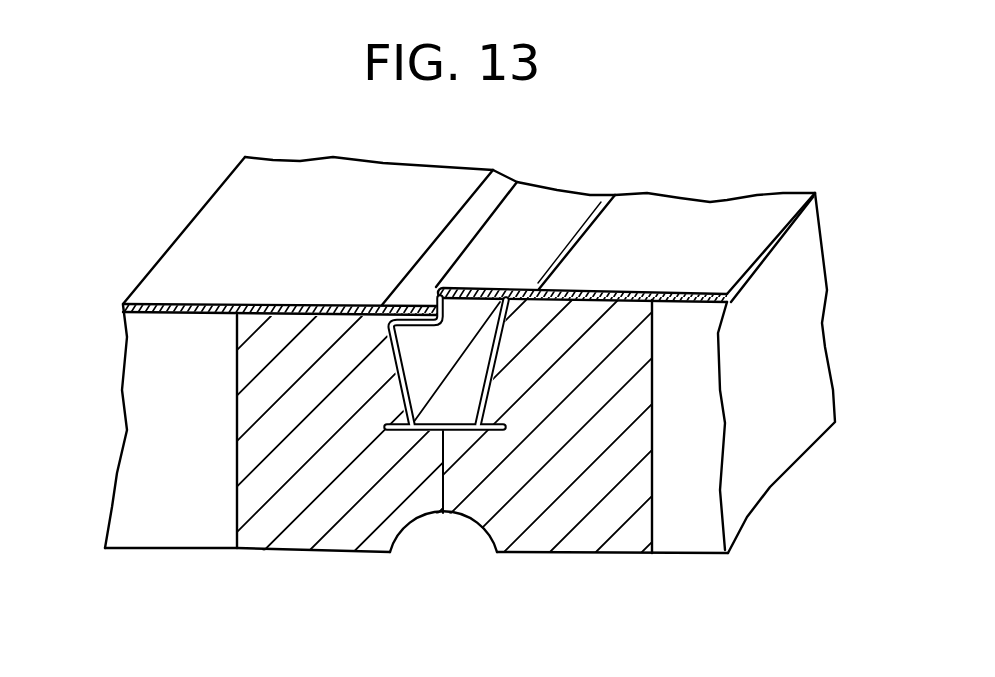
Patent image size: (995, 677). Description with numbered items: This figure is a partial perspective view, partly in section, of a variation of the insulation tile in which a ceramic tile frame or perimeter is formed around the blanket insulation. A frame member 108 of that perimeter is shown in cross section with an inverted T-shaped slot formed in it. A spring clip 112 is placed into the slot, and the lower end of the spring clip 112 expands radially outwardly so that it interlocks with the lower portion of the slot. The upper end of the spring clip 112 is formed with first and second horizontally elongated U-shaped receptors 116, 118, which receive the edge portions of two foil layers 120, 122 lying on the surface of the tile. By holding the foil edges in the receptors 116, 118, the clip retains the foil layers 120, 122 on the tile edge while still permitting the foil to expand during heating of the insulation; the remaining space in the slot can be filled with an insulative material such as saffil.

The frame member 108 is at (658, 515).
The spring clip 112 is at (532, 242).
The first horizontally elongated U-shaped receptor 116 is at (540, 266).
The second horizontally elongated U-shaped receptor 118 is at (422, 282).
The foil layer 120 is at (225, 222).
The foil layer 122 is at (730, 225).